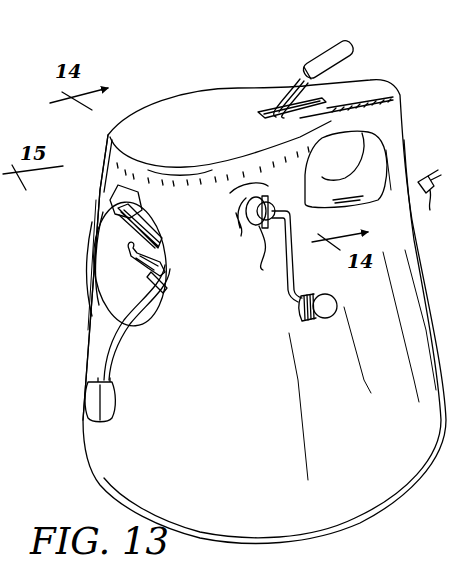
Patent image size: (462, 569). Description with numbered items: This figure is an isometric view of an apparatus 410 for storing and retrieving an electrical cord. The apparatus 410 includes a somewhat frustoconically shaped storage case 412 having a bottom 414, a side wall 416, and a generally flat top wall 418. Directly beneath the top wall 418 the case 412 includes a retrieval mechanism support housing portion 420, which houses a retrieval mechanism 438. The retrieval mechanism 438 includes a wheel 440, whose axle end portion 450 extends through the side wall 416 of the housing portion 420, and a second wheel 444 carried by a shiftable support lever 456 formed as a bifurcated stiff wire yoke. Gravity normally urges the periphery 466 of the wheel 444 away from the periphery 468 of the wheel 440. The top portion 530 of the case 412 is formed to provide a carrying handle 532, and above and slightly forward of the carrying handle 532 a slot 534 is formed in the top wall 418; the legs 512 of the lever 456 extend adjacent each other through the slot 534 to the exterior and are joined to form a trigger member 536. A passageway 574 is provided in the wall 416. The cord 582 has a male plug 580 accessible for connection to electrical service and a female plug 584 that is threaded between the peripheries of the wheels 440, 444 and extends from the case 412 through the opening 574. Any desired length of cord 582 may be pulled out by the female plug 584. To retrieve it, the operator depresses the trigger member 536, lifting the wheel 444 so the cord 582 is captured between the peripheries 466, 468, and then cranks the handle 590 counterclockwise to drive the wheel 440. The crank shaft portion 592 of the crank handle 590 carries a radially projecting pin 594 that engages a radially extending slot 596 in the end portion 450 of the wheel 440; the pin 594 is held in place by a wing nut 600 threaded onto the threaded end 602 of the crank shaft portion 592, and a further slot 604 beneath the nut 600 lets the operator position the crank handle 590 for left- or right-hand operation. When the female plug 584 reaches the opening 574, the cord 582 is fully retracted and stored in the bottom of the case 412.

The apparatus 410 is at (220, 84).
The storage case 412 is at (385, 398).
The bottom 414 is at (383, 496).
The side wall 416 is at (85, 330).
The top wall 418 is at (235, 96).
The retrieval mechanism support housing portion 420 is at (77, 244).
The retrieval mechanism 438 is at (124, 276).
The wheel 440 is at (112, 201).
The wheel 444 is at (158, 291).
The axle end portion 450 is at (245, 215).
The shiftable support lever 456 is at (290, 74).
The periphery of wheel 466 is at (163, 253).
The periphery of wheel 468 is at (133, 230).
The leg 512 is at (266, 92).
The top portion 530 is at (392, 82).
The carrying handle 532 is at (388, 148).
The slot 534 is at (284, 118).
The trigger member 536 is at (349, 46).
The passageway 574 is at (85, 303).
The male plug 580 is at (426, 197).
The cord 582 is at (108, 352).
The female plug 584 is at (118, 410).
The crank handle 590 is at (284, 312).
The crank shaft portion 592 is at (296, 205).
The radially projecting pin 594 is at (265, 258).
The radially extending slot 596 is at (244, 203).
The wing nut 600 is at (454, 255).
The threaded end 602 is at (454, 278).
The slot 604 is at (454, 298).